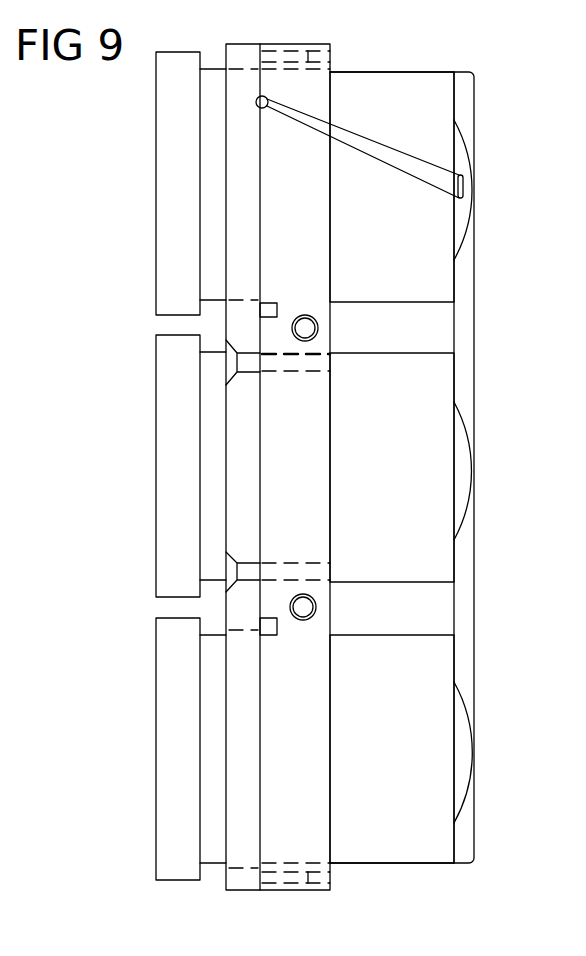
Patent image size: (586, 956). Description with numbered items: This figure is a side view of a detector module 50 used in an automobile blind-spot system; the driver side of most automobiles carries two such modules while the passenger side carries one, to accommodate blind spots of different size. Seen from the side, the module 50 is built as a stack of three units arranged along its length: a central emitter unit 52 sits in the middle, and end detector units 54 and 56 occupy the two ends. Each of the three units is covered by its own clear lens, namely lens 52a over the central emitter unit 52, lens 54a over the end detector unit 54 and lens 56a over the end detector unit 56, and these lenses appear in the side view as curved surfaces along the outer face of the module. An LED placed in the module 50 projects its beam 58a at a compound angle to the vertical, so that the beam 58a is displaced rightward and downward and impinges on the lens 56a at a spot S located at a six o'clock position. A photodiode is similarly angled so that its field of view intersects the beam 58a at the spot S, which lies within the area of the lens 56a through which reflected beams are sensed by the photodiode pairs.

The detector module 50 is at (168, 251).
The beam 58a is at (305, 114).
The spot S is at (465, 187).
The end detector unit 56 is at (455, 278).
The clear lens 56a is at (470, 209).
The central emitter unit 52 is at (453, 558).
The clear lens 52a is at (469, 433).
The end detector unit 54 is at (453, 850).
The clear lens 54a is at (469, 712).